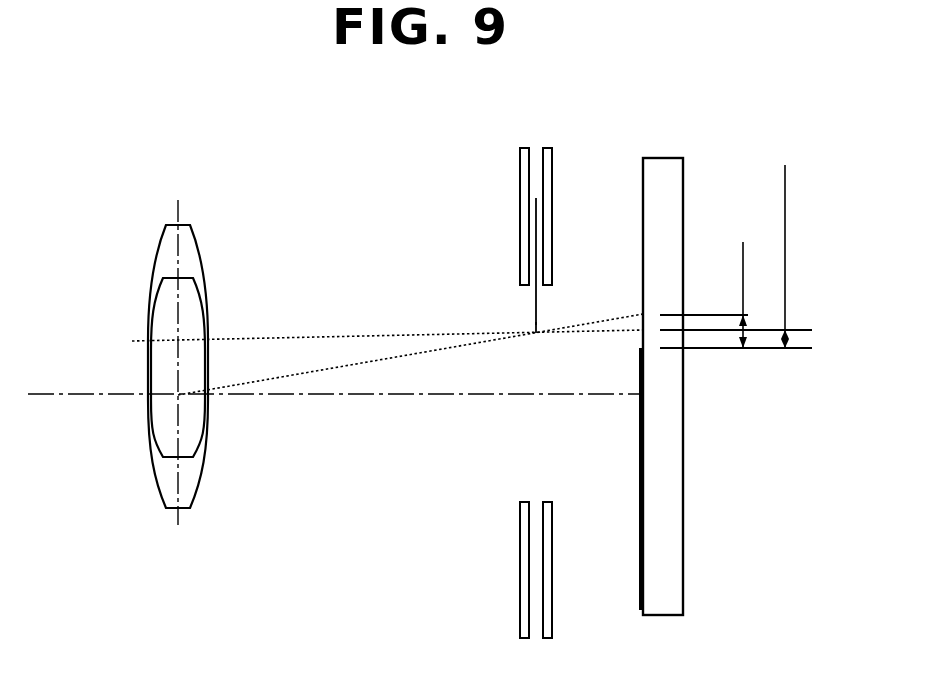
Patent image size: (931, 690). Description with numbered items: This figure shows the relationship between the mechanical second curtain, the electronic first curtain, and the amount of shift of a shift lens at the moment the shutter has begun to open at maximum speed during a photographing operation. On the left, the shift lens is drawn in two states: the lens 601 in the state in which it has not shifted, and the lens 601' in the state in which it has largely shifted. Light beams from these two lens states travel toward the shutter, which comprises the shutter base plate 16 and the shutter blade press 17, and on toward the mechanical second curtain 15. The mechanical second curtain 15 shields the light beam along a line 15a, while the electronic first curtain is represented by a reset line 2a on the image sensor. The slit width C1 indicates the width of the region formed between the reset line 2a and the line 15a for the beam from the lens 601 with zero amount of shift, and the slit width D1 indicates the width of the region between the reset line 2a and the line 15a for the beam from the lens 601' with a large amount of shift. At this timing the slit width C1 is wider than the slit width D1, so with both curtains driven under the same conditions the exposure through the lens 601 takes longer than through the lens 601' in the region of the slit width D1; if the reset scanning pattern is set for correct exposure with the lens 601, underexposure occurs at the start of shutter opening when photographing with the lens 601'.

The shift lens (unshifted state) 601 is at (143, 366).
The shift lens (largely shifted state) 601' is at (138, 347).
The shutter base plate 16 is at (520, 148).
The shutter blade press 17 is at (552, 148).
The mechanical second curtain 15 is at (538, 302).
The shielding line of mechanical second curtain 15a is at (534, 331).
The reset line 2a is at (640, 348).
The slit width C1 is at (743, 281).
The slit width D1 is at (788, 243).